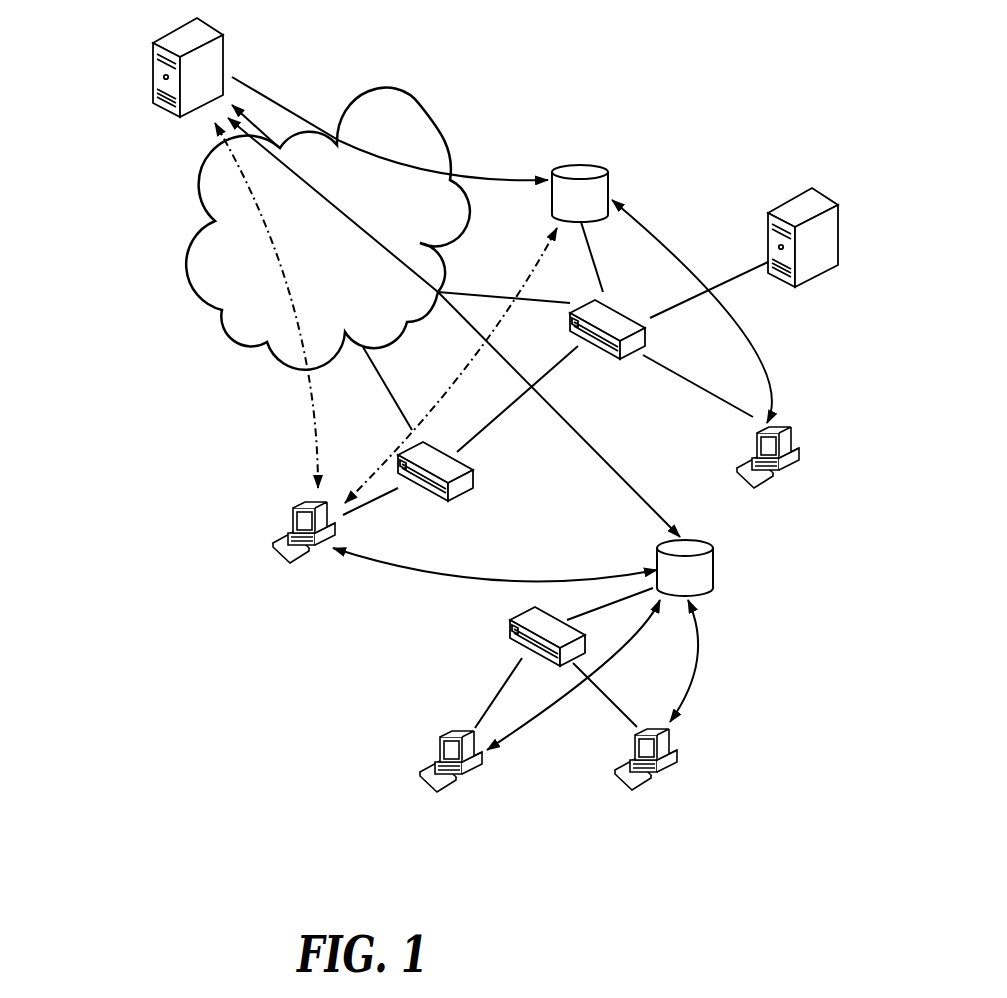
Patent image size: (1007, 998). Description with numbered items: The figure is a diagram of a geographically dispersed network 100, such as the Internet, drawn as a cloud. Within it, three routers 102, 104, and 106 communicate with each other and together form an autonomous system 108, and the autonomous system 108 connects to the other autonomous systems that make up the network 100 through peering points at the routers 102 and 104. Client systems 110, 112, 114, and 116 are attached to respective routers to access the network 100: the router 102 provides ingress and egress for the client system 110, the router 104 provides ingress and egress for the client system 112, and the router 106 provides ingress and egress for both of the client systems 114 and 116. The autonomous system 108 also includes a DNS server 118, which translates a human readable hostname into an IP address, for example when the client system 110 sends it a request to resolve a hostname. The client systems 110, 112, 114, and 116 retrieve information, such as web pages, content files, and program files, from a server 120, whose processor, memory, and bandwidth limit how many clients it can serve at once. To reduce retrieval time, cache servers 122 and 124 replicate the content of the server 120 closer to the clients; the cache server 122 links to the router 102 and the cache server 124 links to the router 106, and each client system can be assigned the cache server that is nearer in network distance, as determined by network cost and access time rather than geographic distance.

The network 100 is at (163, 283).
The router 102 is at (617, 313).
The router 104 is at (447, 503).
The router 106 is at (510, 630).
The autonomous system 108 is at (655, 132).
The client system 110 is at (757, 428).
The client system 112 is at (297, 507).
The client system 114 is at (440, 735).
The client system 116 is at (640, 732).
The DNS server 118 is at (787, 218).
The server 120 is at (162, 40).
The cache server 122 is at (553, 214).
The cache server 124 is at (715, 565).